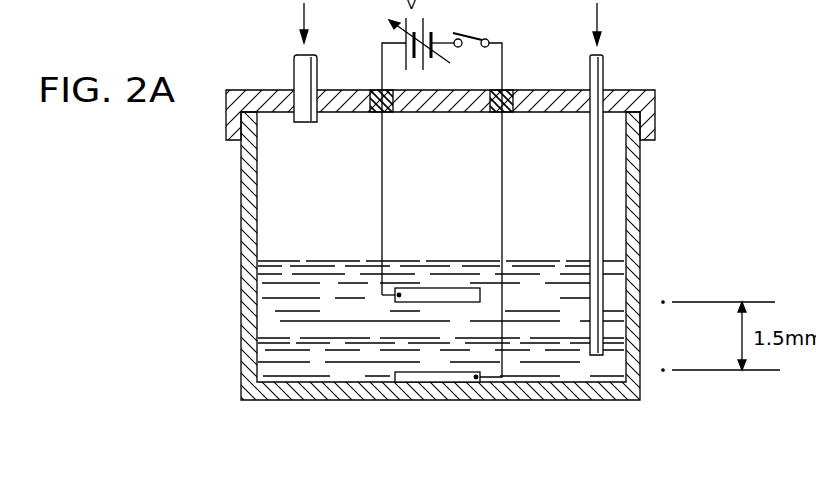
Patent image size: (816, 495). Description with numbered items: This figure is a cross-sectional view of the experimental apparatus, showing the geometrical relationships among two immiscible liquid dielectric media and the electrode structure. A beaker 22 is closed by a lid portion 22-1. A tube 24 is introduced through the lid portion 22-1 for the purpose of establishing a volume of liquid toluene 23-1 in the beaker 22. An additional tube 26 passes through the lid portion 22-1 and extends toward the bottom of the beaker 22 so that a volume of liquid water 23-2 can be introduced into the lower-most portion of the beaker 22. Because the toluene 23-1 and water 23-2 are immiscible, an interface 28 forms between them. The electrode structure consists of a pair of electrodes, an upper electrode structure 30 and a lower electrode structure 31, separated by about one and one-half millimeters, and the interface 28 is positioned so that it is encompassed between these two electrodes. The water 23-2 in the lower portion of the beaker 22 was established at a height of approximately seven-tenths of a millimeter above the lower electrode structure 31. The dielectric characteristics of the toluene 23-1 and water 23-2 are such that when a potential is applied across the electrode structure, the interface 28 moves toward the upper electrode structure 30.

The beaker 22 is at (636, 202).
The lid portion 22-1 is at (656, 104).
The toluene 23-1 is at (270, 307).
The water 23-2 is at (265, 366).
The tube 24 is at (295, 71).
The additional tube 26 is at (606, 66).
The interface 28 is at (275, 334).
The upper electrode structure 30 is at (428, 294).
The lower electrode structure 31 is at (418, 378).